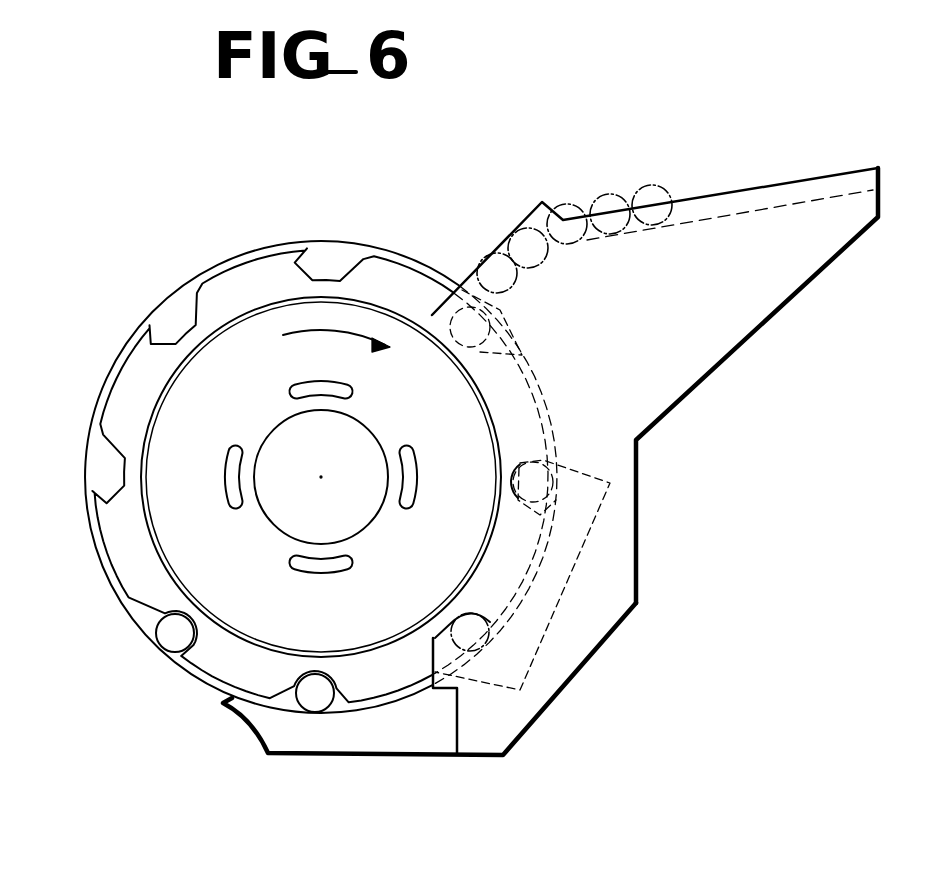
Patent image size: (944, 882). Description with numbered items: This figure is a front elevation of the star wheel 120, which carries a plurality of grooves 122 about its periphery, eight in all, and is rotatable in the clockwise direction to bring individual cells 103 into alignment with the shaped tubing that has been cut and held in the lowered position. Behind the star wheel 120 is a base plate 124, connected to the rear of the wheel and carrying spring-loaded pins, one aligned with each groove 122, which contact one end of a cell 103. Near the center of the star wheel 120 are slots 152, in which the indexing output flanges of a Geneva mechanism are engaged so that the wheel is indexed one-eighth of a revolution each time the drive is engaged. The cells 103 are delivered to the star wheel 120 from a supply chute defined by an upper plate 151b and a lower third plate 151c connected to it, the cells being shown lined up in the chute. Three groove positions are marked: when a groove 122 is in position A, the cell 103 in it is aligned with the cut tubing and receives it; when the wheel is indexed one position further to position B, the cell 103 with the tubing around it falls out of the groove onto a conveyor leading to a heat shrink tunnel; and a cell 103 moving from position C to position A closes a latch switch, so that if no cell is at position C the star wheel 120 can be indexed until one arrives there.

The cell 103 is at (361, 465).
The star wheel 120 is at (245, 406).
The groove 122 is at (293, 436).
The base plate 124 is at (345, 253).
The upper plate 151b is at (752, 302).
The lower third plate 151c is at (417, 737).
The slot 152 is at (350, 390).
The position A is at (290, 695).
The position B is at (183, 653).
The position C is at (490, 622).